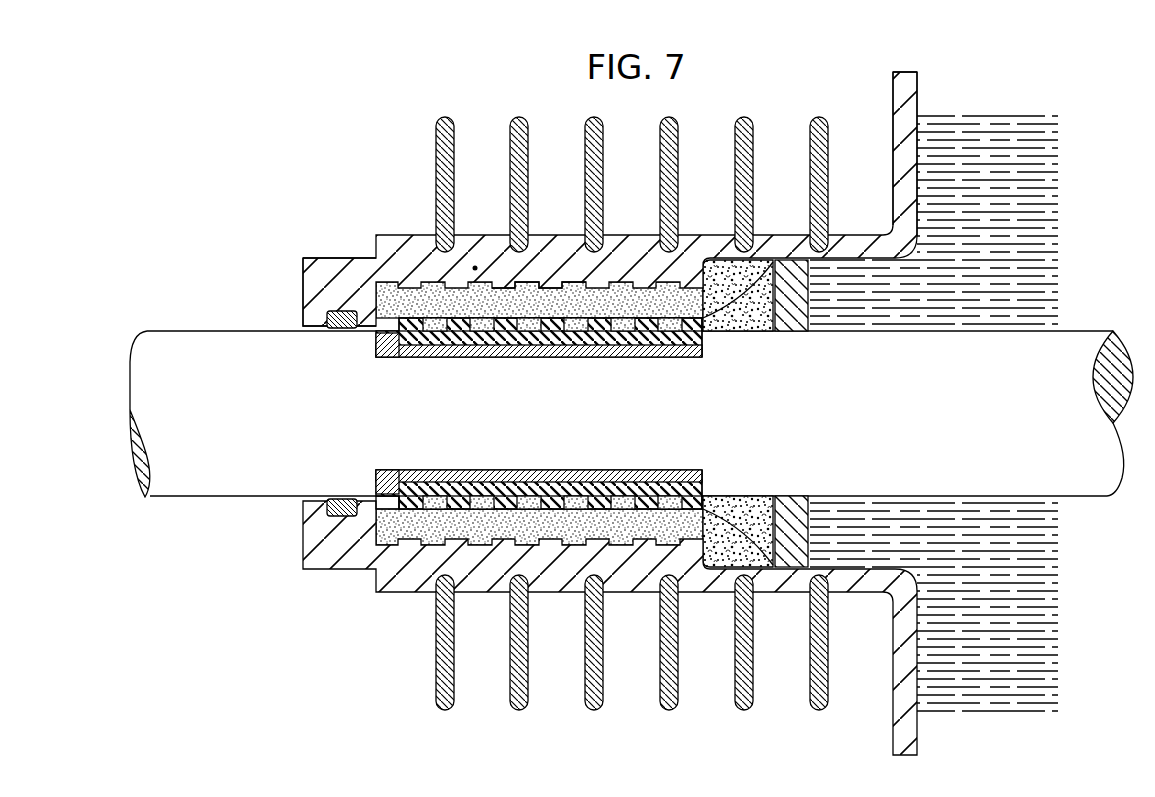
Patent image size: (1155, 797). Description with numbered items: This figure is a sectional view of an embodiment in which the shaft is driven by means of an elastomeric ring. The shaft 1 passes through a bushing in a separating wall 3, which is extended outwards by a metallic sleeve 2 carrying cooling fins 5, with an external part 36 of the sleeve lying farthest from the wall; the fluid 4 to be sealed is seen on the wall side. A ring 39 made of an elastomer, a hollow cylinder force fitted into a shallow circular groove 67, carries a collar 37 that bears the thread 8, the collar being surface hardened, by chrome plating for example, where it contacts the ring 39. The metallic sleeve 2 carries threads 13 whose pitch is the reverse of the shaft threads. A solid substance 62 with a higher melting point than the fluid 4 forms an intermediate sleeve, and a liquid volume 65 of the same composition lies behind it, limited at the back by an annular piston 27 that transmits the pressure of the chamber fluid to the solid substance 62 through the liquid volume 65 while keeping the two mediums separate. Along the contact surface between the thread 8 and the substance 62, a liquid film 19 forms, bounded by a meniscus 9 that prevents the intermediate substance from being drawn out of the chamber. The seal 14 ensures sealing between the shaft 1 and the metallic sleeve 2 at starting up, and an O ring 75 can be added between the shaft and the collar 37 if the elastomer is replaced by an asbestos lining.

The shaft 1 is at (247, 352).
The metallic sleeve 2 is at (862, 246).
The separating wall 3 is at (902, 144).
The fluid 4 is at (980, 170).
The cooling fins 5 is at (508, 170).
The threads 8 is at (507, 358).
The meniscus 9 is at (389, 510).
The threads 13 is at (605, 290).
The seal 14 is at (341, 310).
The liquid film 19 is at (530, 300).
The annular piston 27 is at (790, 297).
The external part of the sleeve 36 is at (305, 293).
The collar 37 is at (582, 358).
The ring made of an elastomer 39 is at (441, 358).
The solid substance 62 is at (715, 262).
The liquid volume 65 is at (752, 333).
The shallow circular groove 67 is at (706, 338).
The O ring 75 is at (395, 358).